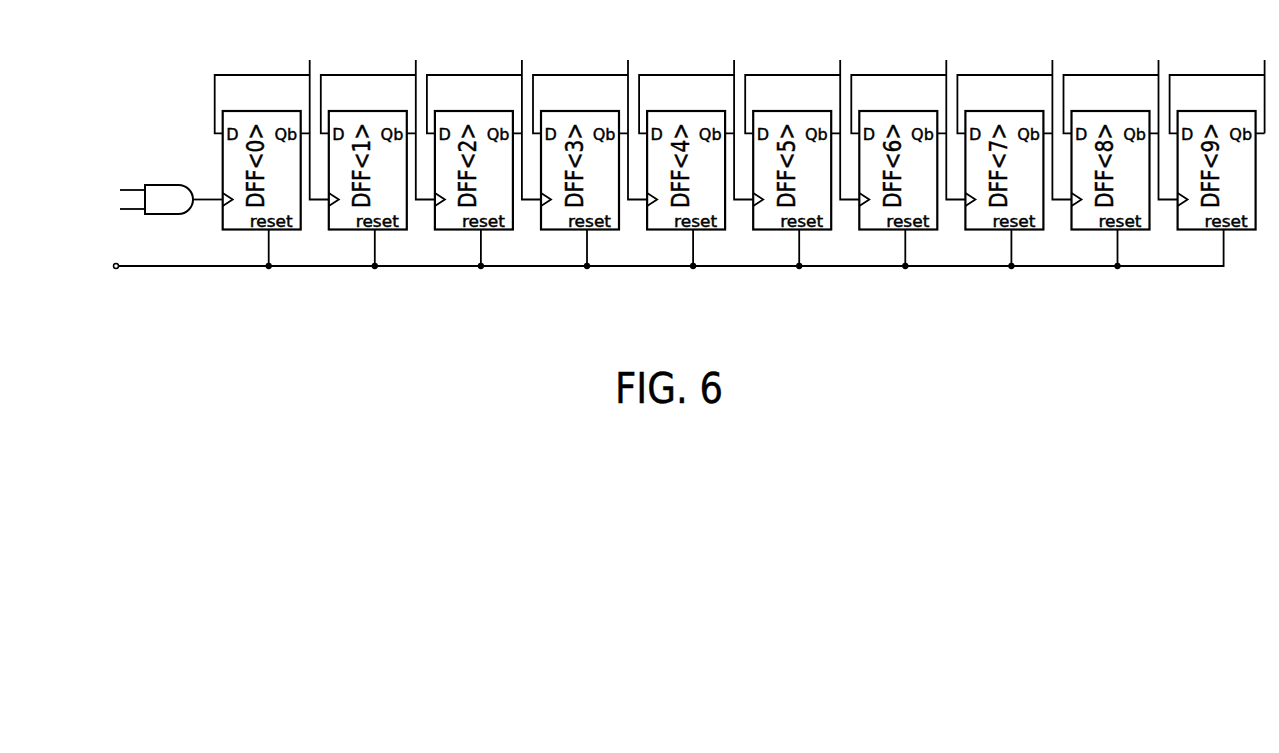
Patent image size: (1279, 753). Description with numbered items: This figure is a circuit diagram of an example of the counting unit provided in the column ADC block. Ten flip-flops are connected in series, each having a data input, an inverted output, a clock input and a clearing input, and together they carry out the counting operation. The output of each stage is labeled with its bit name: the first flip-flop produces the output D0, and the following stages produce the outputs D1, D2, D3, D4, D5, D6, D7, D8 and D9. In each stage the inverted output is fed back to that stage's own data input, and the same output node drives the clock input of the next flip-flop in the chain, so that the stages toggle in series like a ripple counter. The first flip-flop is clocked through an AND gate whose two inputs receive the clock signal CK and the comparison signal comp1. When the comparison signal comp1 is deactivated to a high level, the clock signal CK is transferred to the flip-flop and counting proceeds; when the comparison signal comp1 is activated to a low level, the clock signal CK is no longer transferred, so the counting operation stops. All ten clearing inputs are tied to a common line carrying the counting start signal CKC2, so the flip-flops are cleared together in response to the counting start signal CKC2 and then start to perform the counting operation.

The flip-flop output D0 is at (313, 120).
The flip-flop output D1 is at (420, 120).
The flip-flop output D2 is at (526, 120).
The flip-flop output D3 is at (632, 120).
The flip-flop output D4 is at (738, 120).
The flip-flop output D5 is at (844, 120).
The flip-flop output D6 is at (950, 120).
The flip-flop output D7 is at (1056, 120).
The flip-flop output D8 is at (1162, 120).
The flip-flop output D9 is at (1264, 86).
The clock signal CK is at (115, 191).
The comparison signal comp1 is at (99, 210).
The counting start signal CKC2 is at (644, 253).